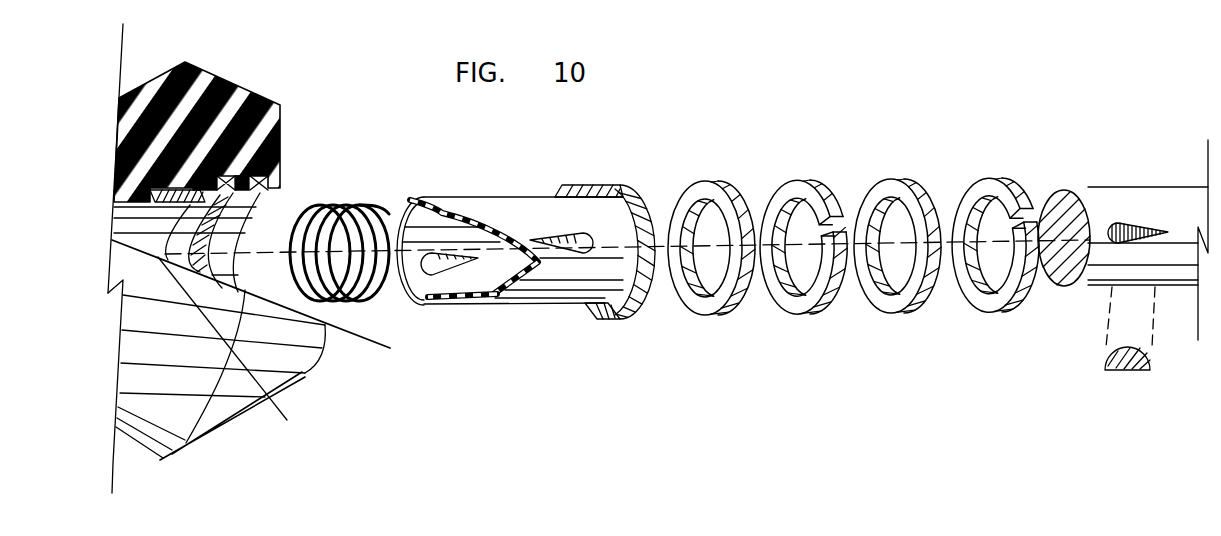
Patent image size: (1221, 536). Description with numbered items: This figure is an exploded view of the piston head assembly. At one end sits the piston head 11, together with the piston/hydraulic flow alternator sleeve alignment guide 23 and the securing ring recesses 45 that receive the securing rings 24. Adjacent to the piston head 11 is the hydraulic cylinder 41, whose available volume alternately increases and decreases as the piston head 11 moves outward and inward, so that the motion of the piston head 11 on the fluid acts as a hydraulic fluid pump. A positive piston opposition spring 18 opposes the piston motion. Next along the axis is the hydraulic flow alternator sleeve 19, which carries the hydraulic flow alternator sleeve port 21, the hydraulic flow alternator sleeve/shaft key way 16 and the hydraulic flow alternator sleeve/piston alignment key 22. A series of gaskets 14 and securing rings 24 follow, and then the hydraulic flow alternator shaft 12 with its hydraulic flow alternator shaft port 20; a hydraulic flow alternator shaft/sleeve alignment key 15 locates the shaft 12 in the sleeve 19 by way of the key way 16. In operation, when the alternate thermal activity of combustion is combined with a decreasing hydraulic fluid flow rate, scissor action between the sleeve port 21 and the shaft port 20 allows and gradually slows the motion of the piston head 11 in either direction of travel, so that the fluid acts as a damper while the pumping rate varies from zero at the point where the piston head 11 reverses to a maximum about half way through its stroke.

The piston head 11 is at (249, 366).
The hydraulic flow alternator shaft 12 is at (1032, 272).
The gasket 14 is at (812, 222).
The hydraulic flow alternator shaft/sleeve alignment key 15 is at (1096, 333).
The hydraulic flow alternator sleeve/shaft key way 16 is at (489, 278).
The positive piston opposition spring 18 is at (410, 304).
The hydraulic flow alternator sleeve 19 is at (490, 337).
The hydraulic flow alternator shaft port 20 is at (1110, 233).
The hydraulic flow alternator sleeve port 21 is at (507, 207).
The hydraulic flow alternator sleeve/piston alignment key 22 is at (526, 229).
The piston/hydraulic flow alternator sleeve alignment guide 23 is at (233, 158).
The securing ring 24 is at (887, 266).
The hydraulic cylinder 41 is at (253, 346).
The securing ring recesses 45 is at (259, 216).